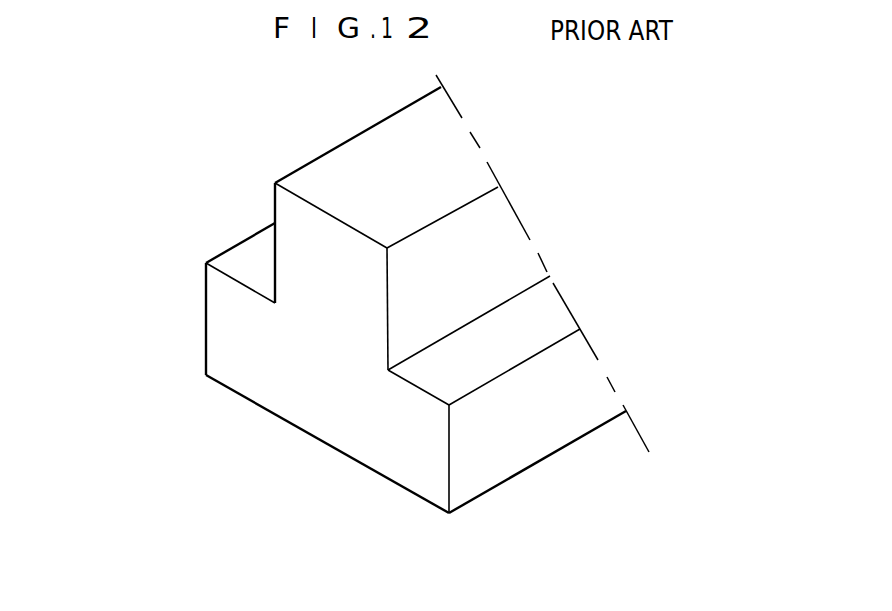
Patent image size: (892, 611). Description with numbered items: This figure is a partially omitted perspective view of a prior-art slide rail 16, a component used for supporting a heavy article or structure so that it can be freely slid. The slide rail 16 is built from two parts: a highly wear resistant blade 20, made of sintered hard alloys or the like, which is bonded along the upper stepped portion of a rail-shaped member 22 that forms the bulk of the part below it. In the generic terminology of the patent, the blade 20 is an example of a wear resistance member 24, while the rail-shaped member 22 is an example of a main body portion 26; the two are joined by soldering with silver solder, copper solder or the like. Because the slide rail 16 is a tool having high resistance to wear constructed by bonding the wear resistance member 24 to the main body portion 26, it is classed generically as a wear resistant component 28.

The slide rail 16 is at (360, 301).
The wear resistant component 28 is at (360, 301).
The blade 20 is at (355, 228).
The wear resistance member 24 is at (297, 230).
The rail-shaped member 22 is at (416, 375).
The main body portion 26 is at (310, 395).